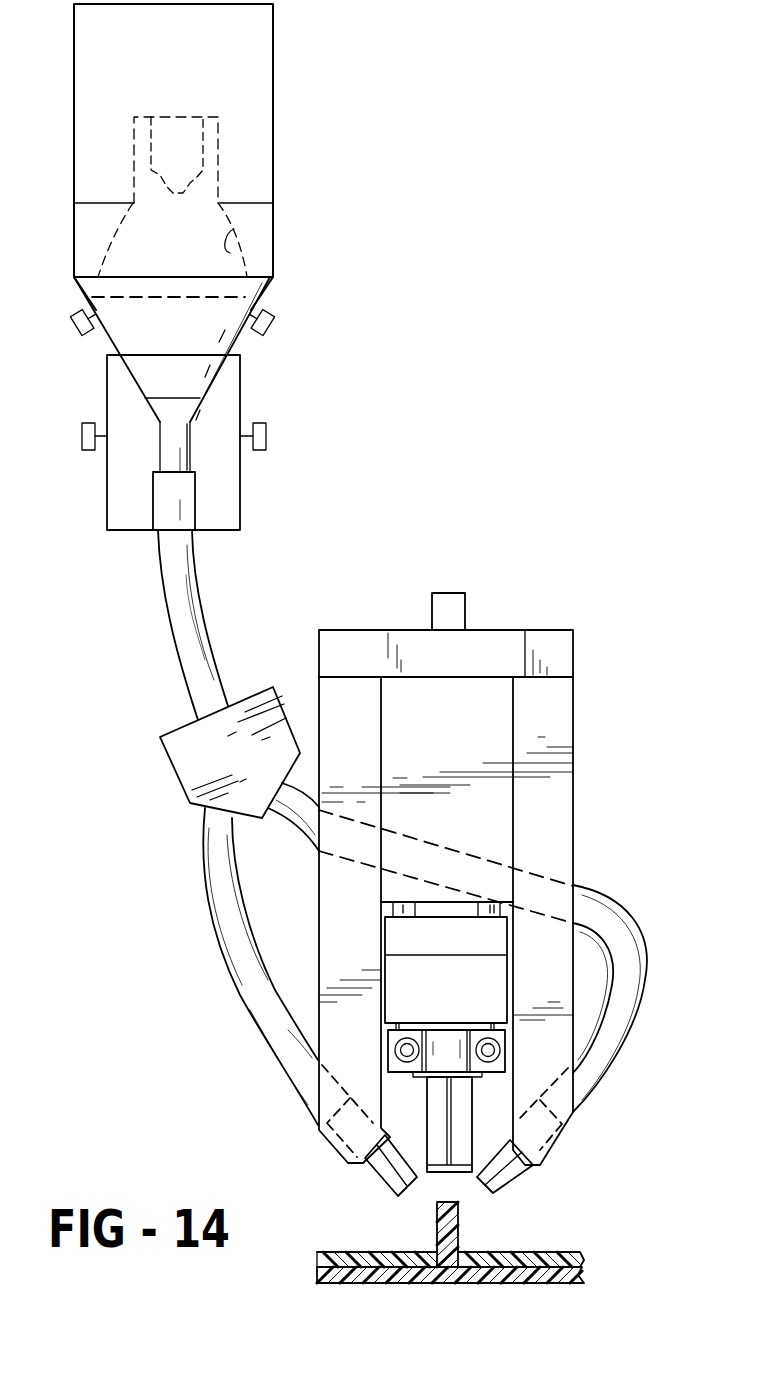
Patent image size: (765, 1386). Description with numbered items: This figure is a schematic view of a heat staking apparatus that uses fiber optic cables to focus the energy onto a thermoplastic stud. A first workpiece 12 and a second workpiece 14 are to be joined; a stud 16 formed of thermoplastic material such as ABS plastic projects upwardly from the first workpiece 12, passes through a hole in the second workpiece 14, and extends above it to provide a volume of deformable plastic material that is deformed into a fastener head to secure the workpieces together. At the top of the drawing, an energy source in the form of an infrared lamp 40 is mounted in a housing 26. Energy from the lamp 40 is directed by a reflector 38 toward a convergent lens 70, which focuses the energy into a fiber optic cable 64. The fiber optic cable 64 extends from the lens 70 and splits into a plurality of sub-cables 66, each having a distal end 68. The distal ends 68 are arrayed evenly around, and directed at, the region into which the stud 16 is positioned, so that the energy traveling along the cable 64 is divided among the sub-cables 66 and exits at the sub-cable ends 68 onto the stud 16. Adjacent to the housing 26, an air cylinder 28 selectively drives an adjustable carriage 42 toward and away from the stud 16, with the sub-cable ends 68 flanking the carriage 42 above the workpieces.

The first workpiece 12 is at (584, 1270).
The second workpiece 14 is at (568, 1252).
The stud 16 is at (437, 1233).
The housing 26 is at (247, 105).
The air cylinder 28 is at (483, 725).
The reflector 38 is at (230, 253).
The infrared lamp 40 is at (203, 145).
The adjustable carriage 42 is at (475, 1107).
The fiber optic cable 64 is at (198, 605).
The sub-cables 66 is at (217, 950).
The distal ends 68 is at (403, 1196).
The convergent lens 70 is at (197, 297).